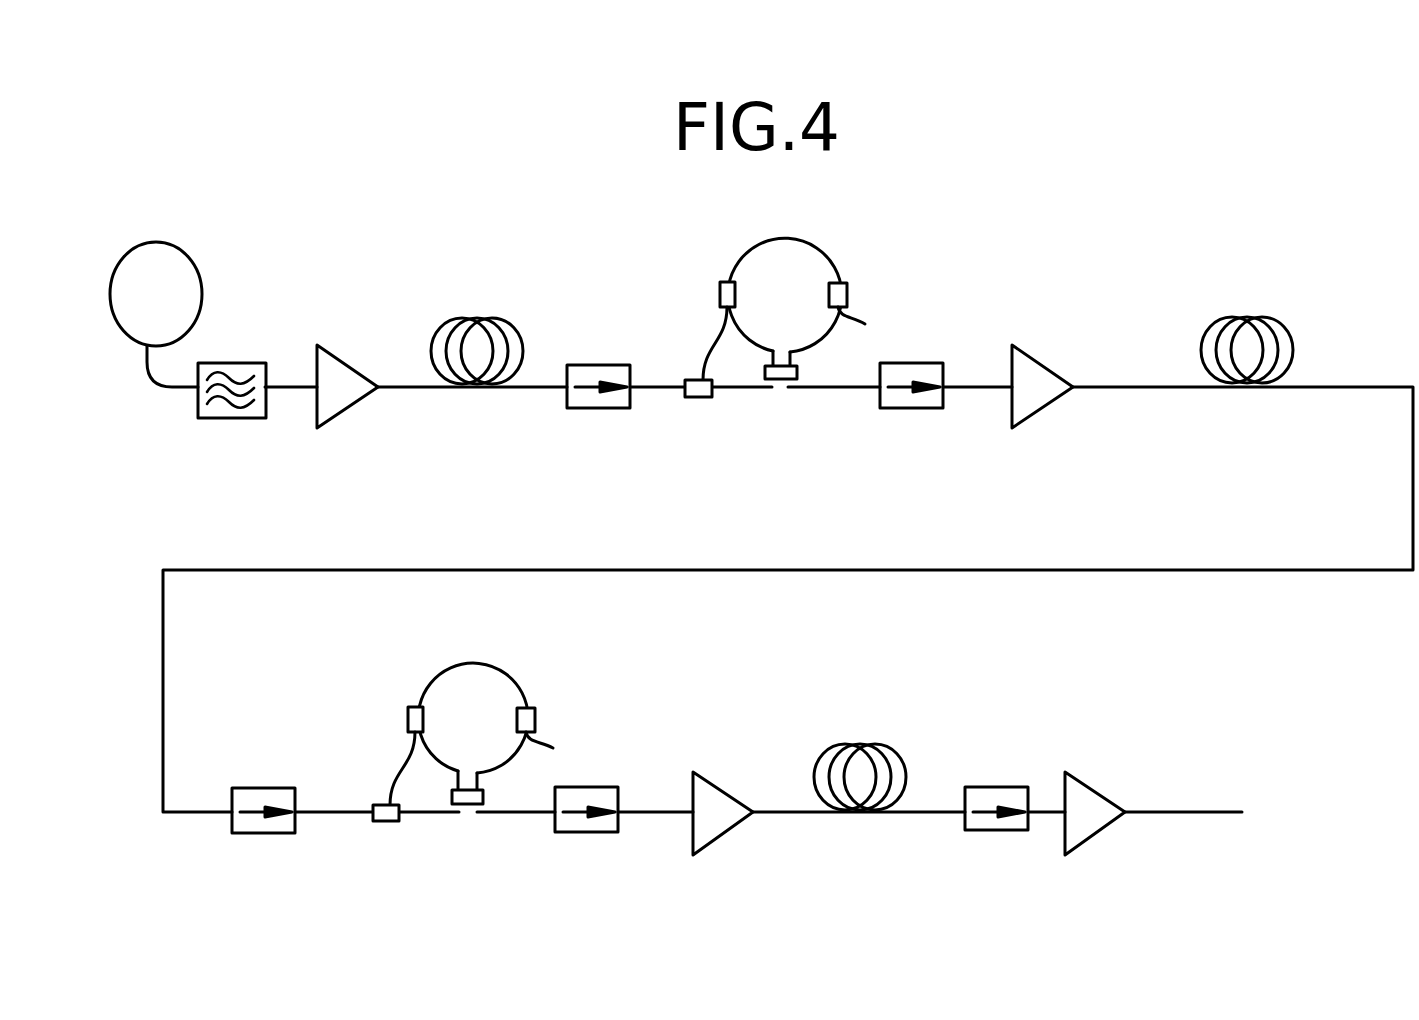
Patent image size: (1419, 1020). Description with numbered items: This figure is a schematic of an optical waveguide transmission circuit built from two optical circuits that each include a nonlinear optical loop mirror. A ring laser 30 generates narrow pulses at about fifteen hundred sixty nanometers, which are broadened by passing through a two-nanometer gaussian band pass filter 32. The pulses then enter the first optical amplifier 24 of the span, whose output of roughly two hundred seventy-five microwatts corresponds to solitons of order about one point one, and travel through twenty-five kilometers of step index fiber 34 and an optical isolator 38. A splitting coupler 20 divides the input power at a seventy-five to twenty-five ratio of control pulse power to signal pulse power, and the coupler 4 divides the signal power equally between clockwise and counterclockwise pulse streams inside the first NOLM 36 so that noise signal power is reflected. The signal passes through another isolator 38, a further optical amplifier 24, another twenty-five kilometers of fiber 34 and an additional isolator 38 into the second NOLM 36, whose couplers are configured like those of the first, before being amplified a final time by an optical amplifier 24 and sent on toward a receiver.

The coupler 4 is at (783, 380).
The splitting coupler 20 is at (697, 398).
The optical amplifier 24 is at (348, 355).
The ring laser 30 is at (157, 242).
The gaussian band pass filter 32 is at (228, 418).
The step index fiber 34 is at (477, 318).
The NOLM 36 is at (765, 312).
The optical isolator 38 is at (590, 365).